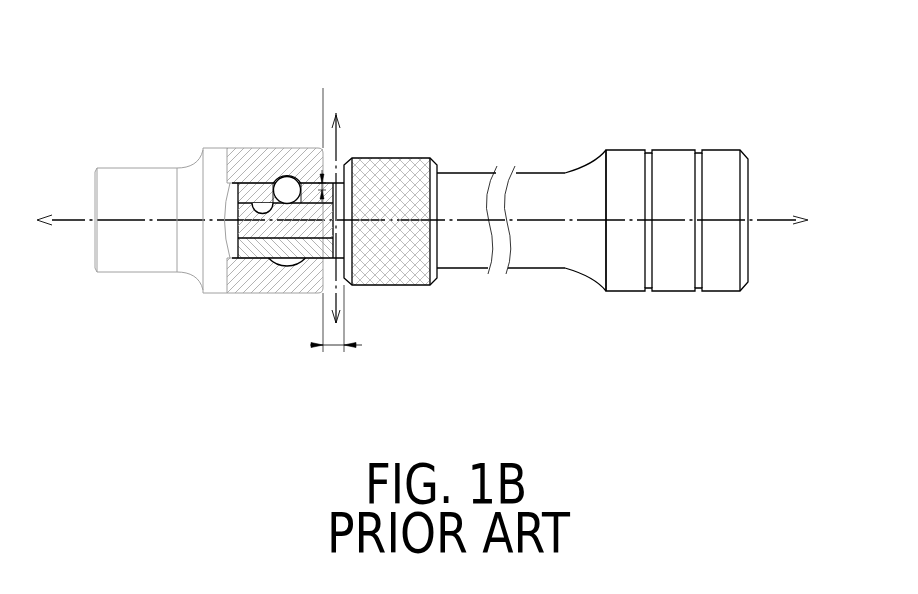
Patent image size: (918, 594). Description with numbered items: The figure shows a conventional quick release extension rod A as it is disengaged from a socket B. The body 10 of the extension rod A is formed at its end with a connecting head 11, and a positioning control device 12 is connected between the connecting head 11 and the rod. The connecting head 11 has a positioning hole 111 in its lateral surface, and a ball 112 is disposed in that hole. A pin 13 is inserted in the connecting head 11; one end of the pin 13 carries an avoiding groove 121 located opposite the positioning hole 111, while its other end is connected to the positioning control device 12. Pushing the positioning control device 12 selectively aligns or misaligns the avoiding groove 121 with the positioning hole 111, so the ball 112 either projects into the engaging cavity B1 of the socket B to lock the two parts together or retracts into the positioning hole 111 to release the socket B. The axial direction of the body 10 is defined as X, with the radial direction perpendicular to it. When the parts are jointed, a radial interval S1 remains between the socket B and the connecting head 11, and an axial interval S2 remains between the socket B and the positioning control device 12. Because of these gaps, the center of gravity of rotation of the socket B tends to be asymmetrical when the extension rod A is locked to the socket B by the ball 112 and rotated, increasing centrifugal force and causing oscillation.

The body 10 is at (553, 268).
The connecting head 11 is at (254, 247).
The positioning hole 111 is at (291, 203).
The ball 112 is at (280, 187).
The positioning control device 12 is at (272, 220).
The groove of pin 121 is at (262, 208).
The pin 13 is at (432, 279).
The quick release extension rod A is at (565, 155).
The socket B is at (138, 170).
The engaging cavity B1 is at (298, 182).
The axial direction X is at (772, 220).
The radial interval S1 is at (340, 200).
The axial interval S2 is at (350, 220).